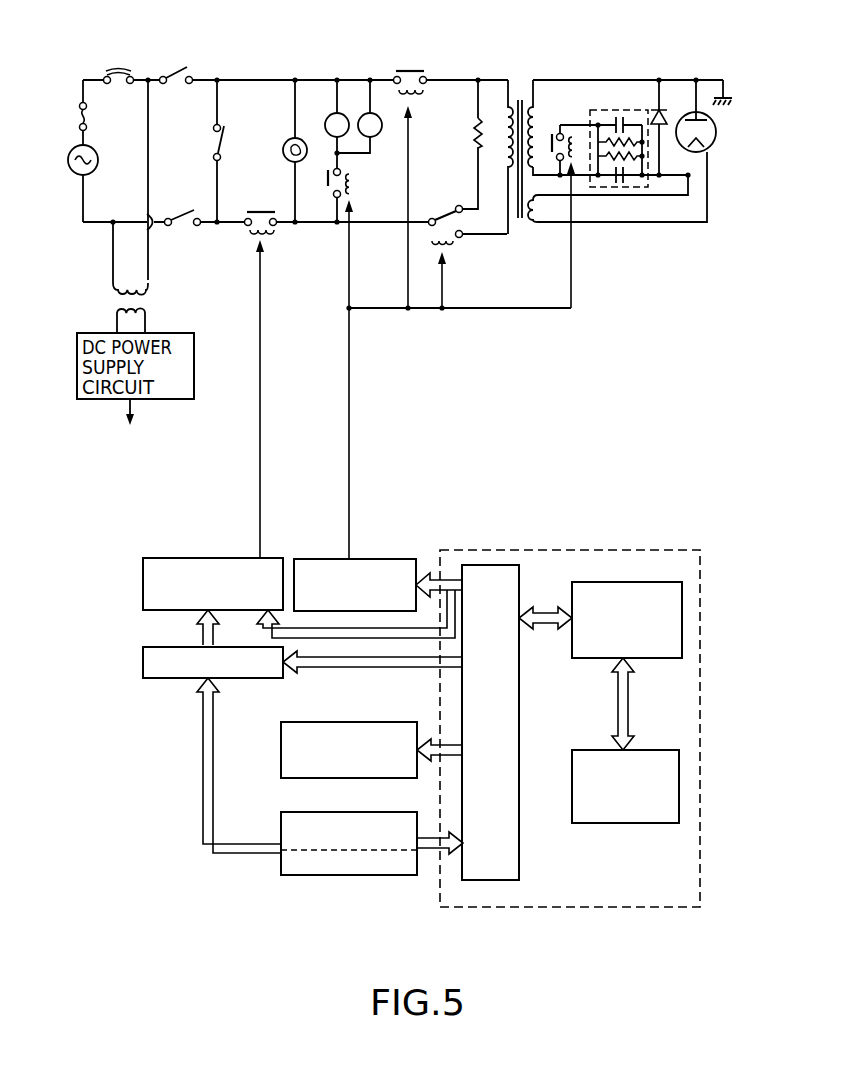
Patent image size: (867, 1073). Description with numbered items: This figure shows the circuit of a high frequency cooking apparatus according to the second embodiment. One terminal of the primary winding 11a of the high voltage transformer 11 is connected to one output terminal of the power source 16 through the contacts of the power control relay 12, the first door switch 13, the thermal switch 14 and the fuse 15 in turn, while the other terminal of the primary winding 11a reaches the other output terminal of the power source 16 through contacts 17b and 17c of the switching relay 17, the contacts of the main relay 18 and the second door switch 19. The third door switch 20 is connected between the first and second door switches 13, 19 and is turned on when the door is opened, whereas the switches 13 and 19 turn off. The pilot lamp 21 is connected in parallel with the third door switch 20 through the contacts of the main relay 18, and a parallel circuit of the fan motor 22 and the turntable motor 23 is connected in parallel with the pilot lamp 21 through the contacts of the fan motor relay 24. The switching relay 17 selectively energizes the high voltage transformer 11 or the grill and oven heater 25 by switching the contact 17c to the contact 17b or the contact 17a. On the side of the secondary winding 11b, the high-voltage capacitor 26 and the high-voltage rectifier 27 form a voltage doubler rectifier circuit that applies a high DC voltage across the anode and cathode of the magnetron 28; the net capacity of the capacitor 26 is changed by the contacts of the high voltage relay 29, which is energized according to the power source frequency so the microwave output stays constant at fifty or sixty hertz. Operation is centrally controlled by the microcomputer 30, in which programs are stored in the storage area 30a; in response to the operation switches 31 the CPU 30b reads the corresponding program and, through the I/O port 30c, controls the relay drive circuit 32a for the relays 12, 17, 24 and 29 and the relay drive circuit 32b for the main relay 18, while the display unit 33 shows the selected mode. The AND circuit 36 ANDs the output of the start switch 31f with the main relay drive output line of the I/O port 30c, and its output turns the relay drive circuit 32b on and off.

The high voltage transformer 11 is at (520, 132).
The primary winding 11a is at (503, 142).
The secondary winding 11b is at (534, 170).
The power control relay 12 is at (414, 97).
The first door switch 13 is at (172, 64).
The thermal switch 14 is at (116, 68).
The fuse 15 is at (79, 106).
The power source 16 is at (76, 172).
The switching relay 17 is at (456, 233).
The contact 17a is at (463, 232).
The contact 17b is at (458, 205).
The contact 17c is at (431, 218).
The main relay 18 is at (276, 234).
The second door switch 19 is at (184, 226).
The third door switch 20 is at (215, 143).
The pilot lamp 21 is at (284, 146).
The fan motor 22 is at (329, 118).
The turntable motor 23 is at (379, 135).
The fan motor relay 24 is at (357, 194).
The grill and oven heater 25 is at (471, 133).
The high-voltage capacitor 26 is at (600, 110).
The high-voltage rectifier 27 is at (669, 114).
The magnetron 28 is at (716, 135).
The high voltage relay 29 is at (568, 132).
The microcomputer 30 is at (700, 588).
The storage area 30a is at (651, 823).
The CPU 30b is at (650, 582).
The I/O port 30c is at (485, 565).
The operation switches 31 is at (327, 868).
The start switch 31f is at (405, 876).
The relay drive circuit 32a is at (378, 558).
The relay drive circuit 32b is at (206, 557).
The display unit 33 is at (281, 752).
The AND circuit 36 is at (143, 665).